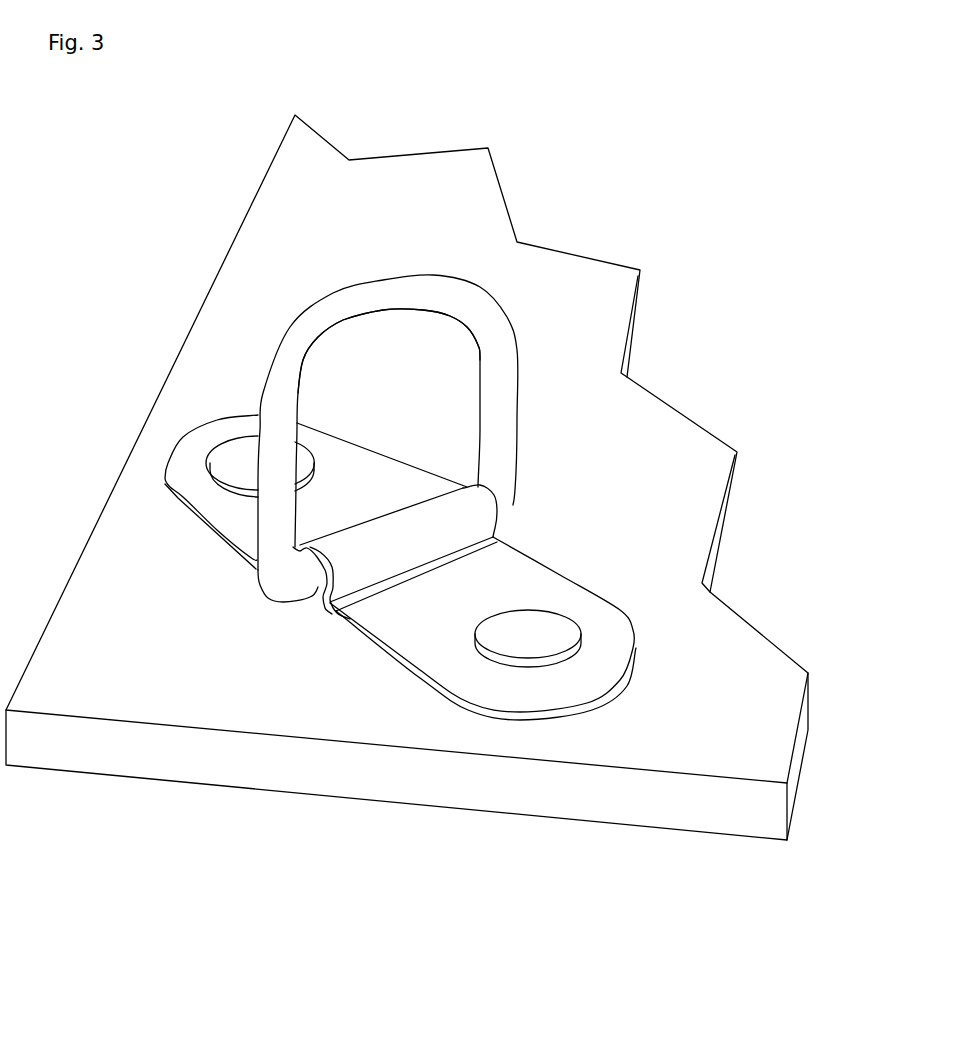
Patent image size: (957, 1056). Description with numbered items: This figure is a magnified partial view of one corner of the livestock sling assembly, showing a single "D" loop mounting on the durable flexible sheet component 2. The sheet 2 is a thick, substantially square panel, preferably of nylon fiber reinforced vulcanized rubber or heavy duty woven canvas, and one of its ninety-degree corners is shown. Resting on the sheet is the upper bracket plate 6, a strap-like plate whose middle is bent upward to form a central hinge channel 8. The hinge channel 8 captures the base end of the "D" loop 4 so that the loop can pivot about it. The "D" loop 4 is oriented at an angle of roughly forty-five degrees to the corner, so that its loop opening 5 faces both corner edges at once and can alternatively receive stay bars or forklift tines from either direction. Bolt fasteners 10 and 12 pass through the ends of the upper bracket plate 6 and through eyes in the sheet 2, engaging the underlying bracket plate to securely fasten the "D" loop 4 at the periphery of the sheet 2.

The durable flexible sheet component 2 is at (383, 217).
The "D" loop 4 is at (483, 313).
The loop opening 5 is at (388, 390).
The upper bracket plate 6 is at (430, 637).
The central hinge channel 8 is at (402, 527).
The bolt fastener 10 is at (537, 638).
The bolt fastener 12 is at (235, 462).